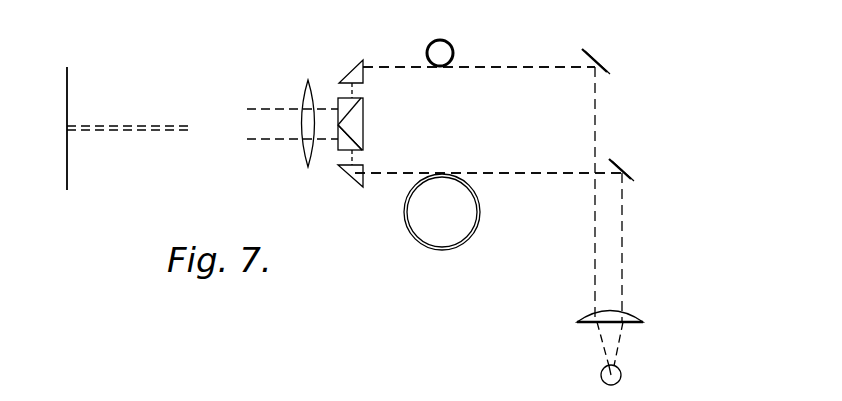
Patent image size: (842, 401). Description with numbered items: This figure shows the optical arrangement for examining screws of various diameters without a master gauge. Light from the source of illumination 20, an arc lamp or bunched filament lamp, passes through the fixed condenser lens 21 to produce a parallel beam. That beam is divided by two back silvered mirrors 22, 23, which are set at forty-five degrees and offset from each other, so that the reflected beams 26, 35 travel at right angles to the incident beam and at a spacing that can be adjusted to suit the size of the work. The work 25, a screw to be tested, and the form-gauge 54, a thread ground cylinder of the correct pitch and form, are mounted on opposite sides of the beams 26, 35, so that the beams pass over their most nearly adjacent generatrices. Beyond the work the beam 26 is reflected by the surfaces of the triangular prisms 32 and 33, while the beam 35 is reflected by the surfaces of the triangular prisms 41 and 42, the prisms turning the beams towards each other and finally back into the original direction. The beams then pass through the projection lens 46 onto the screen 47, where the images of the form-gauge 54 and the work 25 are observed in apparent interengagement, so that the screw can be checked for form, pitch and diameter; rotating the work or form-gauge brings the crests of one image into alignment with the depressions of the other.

The source of illumination 20 is at (601, 374).
The condenser lens 21 is at (587, 318).
The mirror 22 is at (591, 56).
The mirror 23 is at (613, 159).
The work 25 is at (469, 239).
The beam 26 is at (505, 65).
The triangular prism 32 is at (364, 61).
The triangular prism 33 is at (337, 95).
The beam 35 is at (514, 174).
The triangular prism 41 is at (360, 182).
The triangular prism 42 is at (338, 151).
The projection lens 46 is at (305, 92).
The screen 47 is at (67, 90).
The form-gauge 54 is at (442, 52).